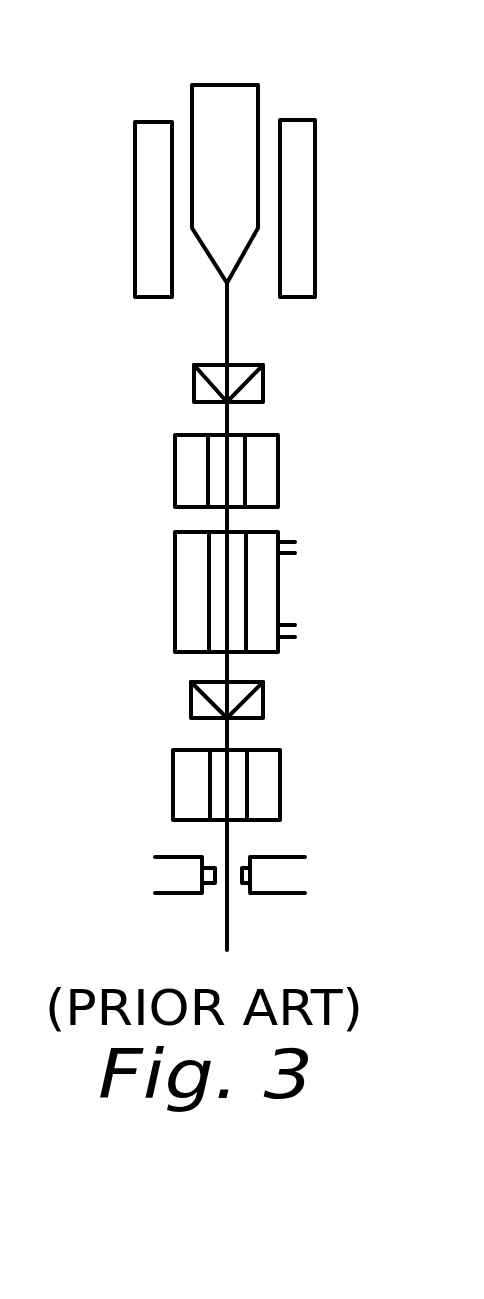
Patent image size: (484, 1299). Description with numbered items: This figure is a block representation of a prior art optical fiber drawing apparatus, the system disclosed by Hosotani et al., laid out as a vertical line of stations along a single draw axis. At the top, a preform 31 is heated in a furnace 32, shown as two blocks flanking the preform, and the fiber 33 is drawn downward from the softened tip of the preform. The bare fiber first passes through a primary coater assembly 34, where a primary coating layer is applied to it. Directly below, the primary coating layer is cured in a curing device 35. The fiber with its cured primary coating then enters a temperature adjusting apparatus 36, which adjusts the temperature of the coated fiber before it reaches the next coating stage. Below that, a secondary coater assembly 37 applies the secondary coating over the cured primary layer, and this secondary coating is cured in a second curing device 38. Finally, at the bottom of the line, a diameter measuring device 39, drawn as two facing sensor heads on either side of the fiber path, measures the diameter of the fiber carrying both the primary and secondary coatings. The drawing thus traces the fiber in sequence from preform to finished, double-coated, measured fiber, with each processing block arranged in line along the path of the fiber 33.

The preform 31 is at (227, 98).
The furnace 32 is at (145, 176).
The fiber 33 is at (223, 331).
The primary coater assembly 34 is at (263, 380).
The curing device 35 is at (278, 472).
The temperature adjusting apparatus 36 is at (278, 587).
The secondary coater assembly 37 is at (263, 697).
The curing device 38 is at (280, 778).
The diameter measuring device 39 is at (292, 875).